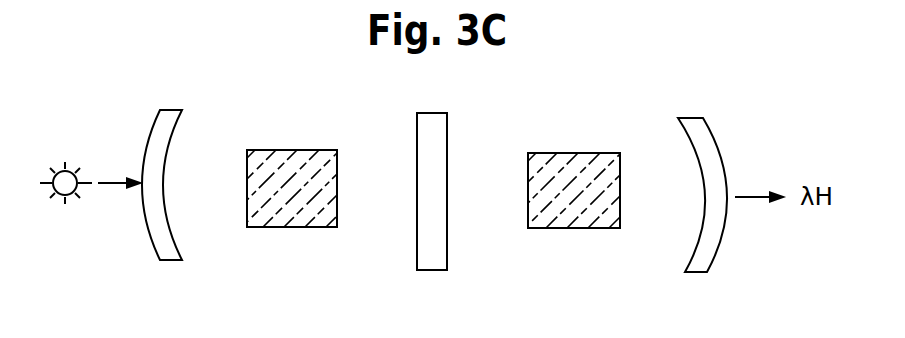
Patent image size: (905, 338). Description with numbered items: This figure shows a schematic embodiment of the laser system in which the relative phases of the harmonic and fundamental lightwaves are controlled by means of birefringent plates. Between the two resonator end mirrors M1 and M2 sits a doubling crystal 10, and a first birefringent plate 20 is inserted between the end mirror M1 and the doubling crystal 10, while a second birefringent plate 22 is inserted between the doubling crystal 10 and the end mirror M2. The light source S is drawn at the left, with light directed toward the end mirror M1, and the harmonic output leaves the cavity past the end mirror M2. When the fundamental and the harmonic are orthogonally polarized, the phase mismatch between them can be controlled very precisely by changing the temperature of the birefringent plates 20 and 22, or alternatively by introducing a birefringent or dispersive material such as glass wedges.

The doubling crystal 10 is at (432, 113).
The birefringent plate 20 is at (311, 150).
The birefringent plate 22 is at (572, 153).
The pump light source S is at (72, 170).
The resonator end mirror M1 is at (162, 201).
The resonator end mirror M2 is at (697, 216).